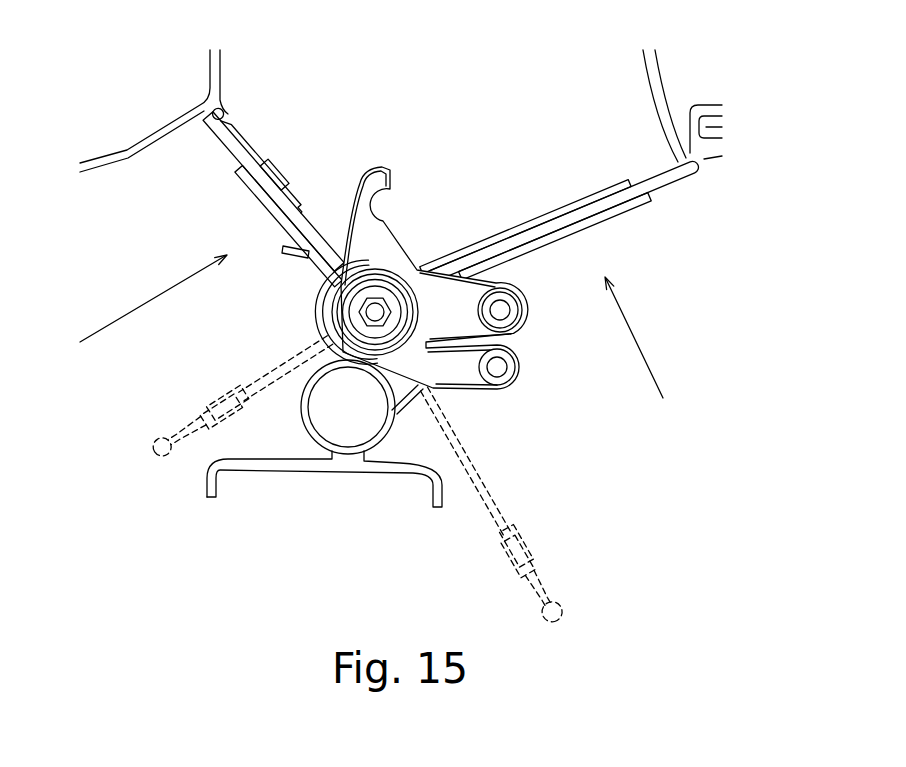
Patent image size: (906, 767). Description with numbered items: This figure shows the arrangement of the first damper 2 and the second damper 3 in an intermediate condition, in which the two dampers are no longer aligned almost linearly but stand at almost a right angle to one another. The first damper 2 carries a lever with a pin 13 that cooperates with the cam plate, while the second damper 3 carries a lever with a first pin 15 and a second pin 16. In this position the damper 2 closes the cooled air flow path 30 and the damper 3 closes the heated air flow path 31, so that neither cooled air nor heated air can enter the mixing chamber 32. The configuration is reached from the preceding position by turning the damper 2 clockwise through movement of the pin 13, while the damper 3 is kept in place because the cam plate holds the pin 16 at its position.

The first damper 2 is at (242, 160).
The second damper 3 is at (616, 212).
The pin 13 is at (520, 305).
The first pin 15 is at (393, 187).
The second pin 16 is at (520, 360).
The cooled air flow path 30 is at (82, 396).
The heated air flow path 31 is at (702, 425).
The mixing chamber 32 is at (466, 78).